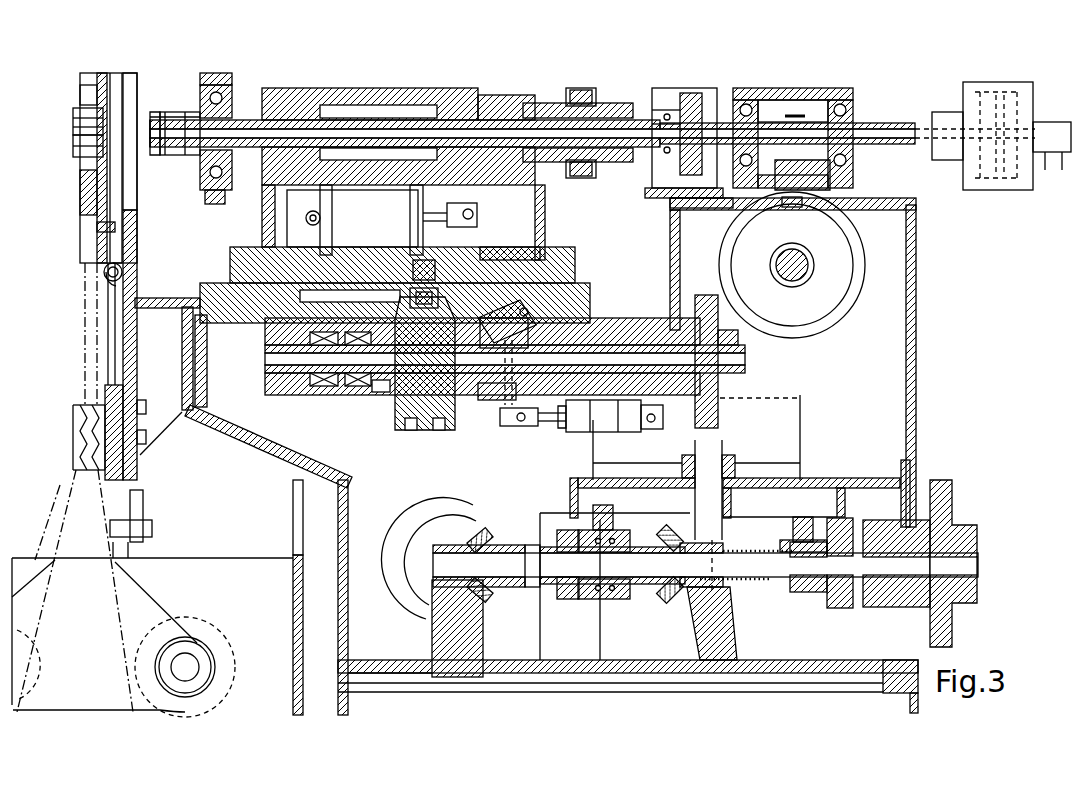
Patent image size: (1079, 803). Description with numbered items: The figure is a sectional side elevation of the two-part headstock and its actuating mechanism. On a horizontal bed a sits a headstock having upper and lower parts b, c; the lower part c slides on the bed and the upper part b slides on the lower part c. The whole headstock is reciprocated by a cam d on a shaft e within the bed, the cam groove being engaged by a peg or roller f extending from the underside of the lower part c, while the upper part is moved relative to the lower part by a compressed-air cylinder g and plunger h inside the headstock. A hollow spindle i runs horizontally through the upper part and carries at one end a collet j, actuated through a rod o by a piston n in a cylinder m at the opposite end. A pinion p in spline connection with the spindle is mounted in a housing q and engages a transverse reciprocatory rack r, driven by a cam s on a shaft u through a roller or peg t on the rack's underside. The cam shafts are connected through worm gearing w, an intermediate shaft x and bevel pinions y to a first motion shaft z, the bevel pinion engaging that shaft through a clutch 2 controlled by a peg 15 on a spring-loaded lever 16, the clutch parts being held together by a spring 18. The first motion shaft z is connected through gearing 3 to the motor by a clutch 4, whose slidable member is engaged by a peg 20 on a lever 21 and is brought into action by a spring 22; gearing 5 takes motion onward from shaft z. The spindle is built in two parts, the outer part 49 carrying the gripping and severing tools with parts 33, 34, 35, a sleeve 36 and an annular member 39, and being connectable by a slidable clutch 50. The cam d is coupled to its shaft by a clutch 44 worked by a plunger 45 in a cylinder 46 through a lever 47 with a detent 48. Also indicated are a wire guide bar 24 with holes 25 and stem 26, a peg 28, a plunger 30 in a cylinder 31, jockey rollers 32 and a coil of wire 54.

The clutch 2 is at (575, 600).
The gearing 3 is at (945, 492).
The clutch 4 is at (838, 600).
The gearing 5 is at (497, 530).
The peg 15 is at (705, 565).
The lever 16 is at (610, 522).
The spring 18 is at (615, 600).
The peg 20 is at (749, 565).
The lever 21 is at (806, 518).
The spring 22 is at (735, 580).
The short bar 24 is at (85, 140).
The holes 25 is at (88, 118).
The stem 26 is at (97, 205).
The peg 28 is at (105, 232).
The plunger 30 is at (122, 275).
The cylinder 31 is at (110, 284).
The jockey rollers 32 is at (80, 440).
The first tool part 33 is at (158, 150).
The second tool part 34 is at (178, 156).
The ring 35 is at (167, 152).
The sleeve 36 is at (190, 104).
The annular member 39 is at (228, 80).
The clutch 44 is at (486, 401).
The plunger 45 is at (553, 422).
The cylinder 46 is at (615, 432).
The lever 47 is at (507, 427).
The detent 48 is at (493, 321).
The outer spindle part 49 is at (425, 112).
The slidable clutch 50 is at (578, 130).
The coils of wire 54 is at (210, 623).
The bed a is at (615, 325).
The upper headstock part b is at (545, 212).
The lower headstock part c is at (265, 262).
The cam d is at (397, 410).
The shaft e is at (375, 392).
The peg or roller f is at (400, 258).
The cylinder g is at (340, 226).
The plunger h is at (470, 214).
The hollow spindle i is at (505, 118).
The collet j is at (165, 115).
The cylinder m is at (982, 185).
The piston n is at (1003, 175).
The rod o is at (888, 128).
The pinion p is at (793, 109).
The housing q is at (853, 95).
The rack r is at (790, 180).
The cam s is at (858, 258).
The roller or peg t is at (795, 207).
The shaft u is at (800, 270).
The worm gearing w is at (695, 426).
The intermediate shaft x is at (712, 455).
The bevel pinions y is at (668, 598).
The first motion shaft z is at (775, 580).